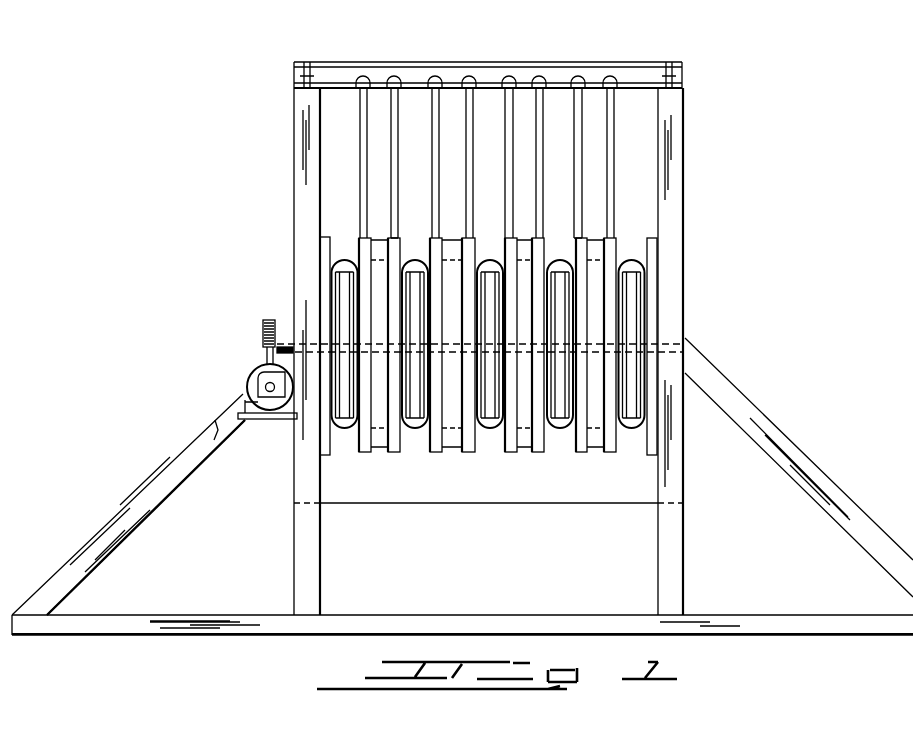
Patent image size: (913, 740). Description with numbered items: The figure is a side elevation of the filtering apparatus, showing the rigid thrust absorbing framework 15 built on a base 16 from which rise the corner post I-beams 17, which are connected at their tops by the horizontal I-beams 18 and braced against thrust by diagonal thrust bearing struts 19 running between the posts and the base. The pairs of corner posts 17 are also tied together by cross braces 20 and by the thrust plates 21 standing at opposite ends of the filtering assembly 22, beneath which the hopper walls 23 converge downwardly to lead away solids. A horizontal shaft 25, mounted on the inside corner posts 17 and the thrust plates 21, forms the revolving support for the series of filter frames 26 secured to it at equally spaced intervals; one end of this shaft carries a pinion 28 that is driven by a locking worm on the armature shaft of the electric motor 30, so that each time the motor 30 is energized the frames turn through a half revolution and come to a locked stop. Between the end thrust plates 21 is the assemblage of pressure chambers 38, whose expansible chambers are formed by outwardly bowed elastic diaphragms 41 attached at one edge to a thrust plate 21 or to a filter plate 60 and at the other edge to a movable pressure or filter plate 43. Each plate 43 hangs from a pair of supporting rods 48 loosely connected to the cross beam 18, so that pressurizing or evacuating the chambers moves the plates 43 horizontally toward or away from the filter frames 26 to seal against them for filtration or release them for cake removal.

The thrust absorbing framework 15 is at (736, 174).
The base 16 is at (818, 633).
The corner post I-beams 17 is at (305, 190).
The horizontal I-beams 18 is at (559, 75).
The diagonal thrust bearing struts 19 is at (125, 516).
The cross braces 20 is at (300, 78).
The thrust plates 21 is at (325, 248).
The filtering assembly 22 is at (539, 468).
The hopper walls 23 is at (620, 552).
The horizontal shaft 25 is at (288, 345).
The filter frames 26 is at (382, 452).
The pinion 28 is at (263, 328).
The electric motor 30 is at (258, 384).
The assemblage of pressure chambers 38 is at (415, 228).
The elastic strip or diaphragm 41 is at (638, 295).
The pressure or filter plate 43 is at (611, 333).
The supporting rods 48 is at (362, 165).
The filter plate 60 is at (393, 237).